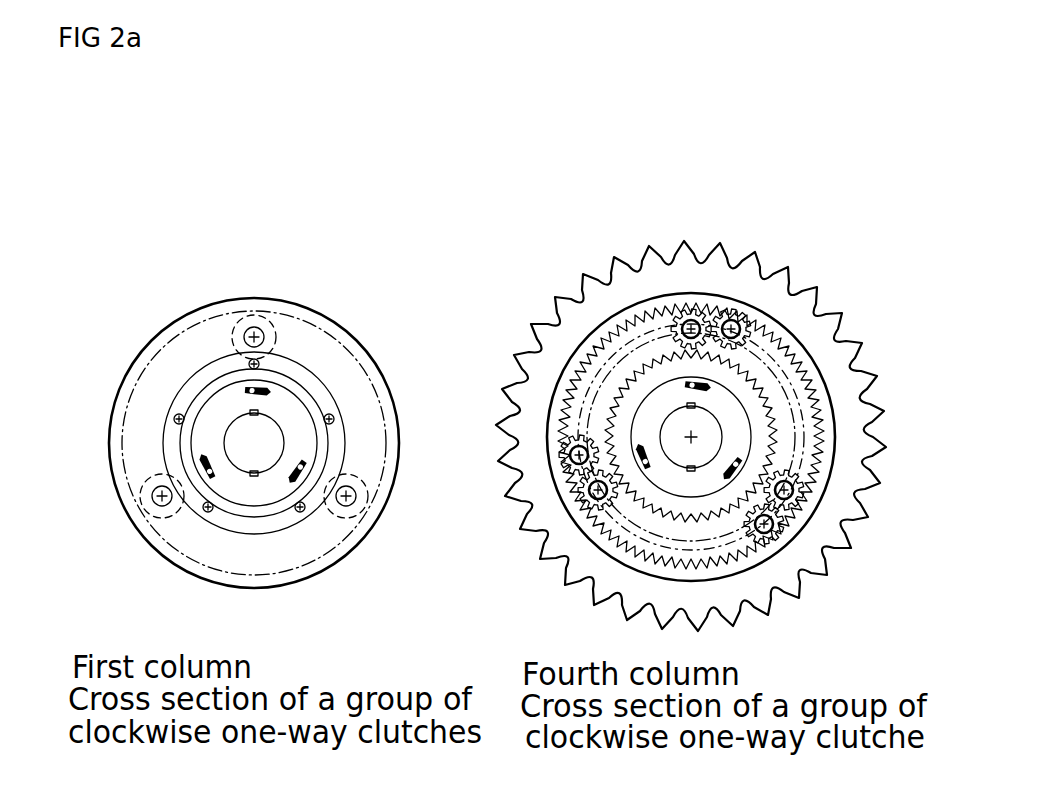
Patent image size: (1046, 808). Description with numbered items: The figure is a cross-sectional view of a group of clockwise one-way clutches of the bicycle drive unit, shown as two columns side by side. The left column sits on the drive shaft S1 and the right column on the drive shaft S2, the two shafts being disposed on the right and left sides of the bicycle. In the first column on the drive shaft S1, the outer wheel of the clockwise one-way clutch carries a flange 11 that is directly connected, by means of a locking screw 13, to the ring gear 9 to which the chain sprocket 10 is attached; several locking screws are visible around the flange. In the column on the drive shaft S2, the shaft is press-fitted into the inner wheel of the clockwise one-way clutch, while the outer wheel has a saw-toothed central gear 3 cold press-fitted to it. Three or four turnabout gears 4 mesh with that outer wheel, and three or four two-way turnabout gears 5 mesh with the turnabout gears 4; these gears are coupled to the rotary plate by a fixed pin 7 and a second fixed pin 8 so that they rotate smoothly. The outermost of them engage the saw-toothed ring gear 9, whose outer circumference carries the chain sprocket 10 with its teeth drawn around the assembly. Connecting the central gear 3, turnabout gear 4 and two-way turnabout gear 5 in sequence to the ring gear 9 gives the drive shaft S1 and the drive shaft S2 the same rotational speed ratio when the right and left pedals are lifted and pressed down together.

The central gear 3 is at (617, 368).
The turnabout gear 4 is at (600, 493).
The two-way turnabout gear 5 is at (573, 460).
The fixed pin 7 is at (708, 303).
The second fixed pin 8 is at (733, 303).
The ring gear 9 is at (657, 355).
The chain sprocket 10 is at (797, 308).
The flange 11 is at (203, 380).
The locking screw 13 is at (177, 417).
The drive shaft S1 is at (247, 430).
The drive shaft S2 is at (670, 427).